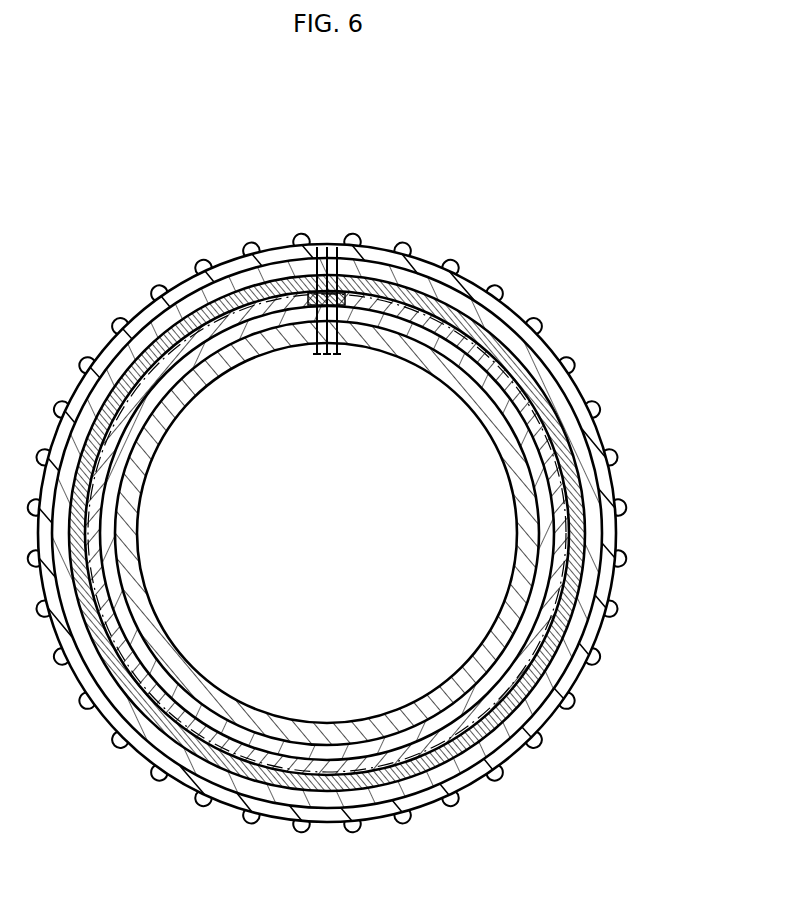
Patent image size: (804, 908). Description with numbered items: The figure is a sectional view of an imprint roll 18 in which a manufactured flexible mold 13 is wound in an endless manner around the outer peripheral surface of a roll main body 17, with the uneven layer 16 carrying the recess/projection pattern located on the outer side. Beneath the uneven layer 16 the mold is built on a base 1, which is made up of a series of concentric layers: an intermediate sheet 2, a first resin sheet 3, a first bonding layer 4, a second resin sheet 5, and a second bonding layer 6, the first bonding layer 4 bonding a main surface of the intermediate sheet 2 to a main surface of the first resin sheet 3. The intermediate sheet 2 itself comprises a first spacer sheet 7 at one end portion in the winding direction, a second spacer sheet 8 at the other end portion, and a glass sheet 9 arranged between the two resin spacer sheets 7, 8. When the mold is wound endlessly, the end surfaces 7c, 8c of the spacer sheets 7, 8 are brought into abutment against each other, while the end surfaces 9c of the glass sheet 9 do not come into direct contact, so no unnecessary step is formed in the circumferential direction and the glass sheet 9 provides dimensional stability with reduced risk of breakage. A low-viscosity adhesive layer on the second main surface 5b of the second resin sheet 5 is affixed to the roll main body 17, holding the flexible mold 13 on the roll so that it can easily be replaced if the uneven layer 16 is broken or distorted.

The imprint roll 18 is at (141, 276).
The flexible mold 13 is at (442, 122).
The uneven layer 16 is at (285, 255).
The base 1 is at (333, 160).
The intermediate sheet 2 is at (305, 202).
The first resin sheet 3 is at (398, 275).
The first bonding layer 4 is at (425, 303).
The second resin sheet 5 is at (462, 337).
The second main surface of the second resin sheet 5b is at (136, 518).
The second bonding layer 6 is at (508, 320).
The first spacer sheet 7 is at (317, 250).
The second spacer sheet 8 is at (328, 250).
The glass sheet 9 is at (339, 252).
The end surface of the first spacer sheet 7c is at (326, 340).
The end surface of the second spacer sheet 8c is at (320, 338).
The end surfaces of the glass sheet 9c is at (300, 334).
The roll main body 17 is at (487, 497).